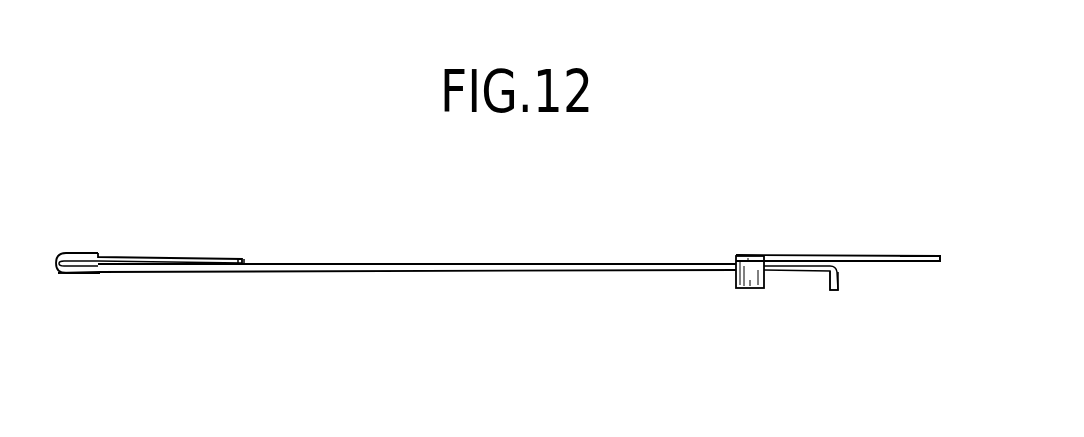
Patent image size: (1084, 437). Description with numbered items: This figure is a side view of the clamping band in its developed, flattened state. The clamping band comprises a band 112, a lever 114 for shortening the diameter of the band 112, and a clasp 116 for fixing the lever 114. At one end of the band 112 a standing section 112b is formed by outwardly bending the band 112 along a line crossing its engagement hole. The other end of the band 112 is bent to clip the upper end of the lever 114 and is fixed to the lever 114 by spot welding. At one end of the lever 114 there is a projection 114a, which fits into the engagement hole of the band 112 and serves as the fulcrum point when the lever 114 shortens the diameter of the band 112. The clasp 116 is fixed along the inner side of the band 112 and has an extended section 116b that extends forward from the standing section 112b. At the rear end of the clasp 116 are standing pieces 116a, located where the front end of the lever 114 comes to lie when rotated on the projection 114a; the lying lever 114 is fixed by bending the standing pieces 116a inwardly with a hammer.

The band 112 is at (479, 272).
The standing section 112b is at (838, 285).
The lever 114 is at (140, 258).
The projection 114a is at (243, 258).
The clasp 116 is at (800, 256).
The standing pieces 116a is at (738, 289).
The extended section 116b is at (918, 265).